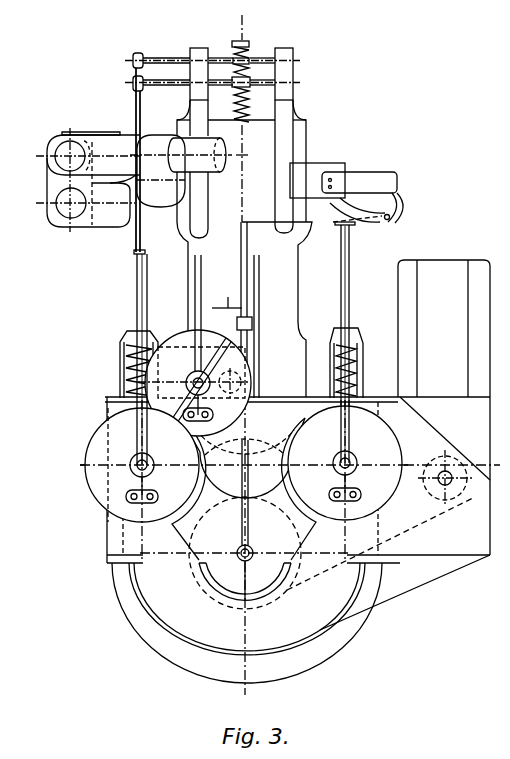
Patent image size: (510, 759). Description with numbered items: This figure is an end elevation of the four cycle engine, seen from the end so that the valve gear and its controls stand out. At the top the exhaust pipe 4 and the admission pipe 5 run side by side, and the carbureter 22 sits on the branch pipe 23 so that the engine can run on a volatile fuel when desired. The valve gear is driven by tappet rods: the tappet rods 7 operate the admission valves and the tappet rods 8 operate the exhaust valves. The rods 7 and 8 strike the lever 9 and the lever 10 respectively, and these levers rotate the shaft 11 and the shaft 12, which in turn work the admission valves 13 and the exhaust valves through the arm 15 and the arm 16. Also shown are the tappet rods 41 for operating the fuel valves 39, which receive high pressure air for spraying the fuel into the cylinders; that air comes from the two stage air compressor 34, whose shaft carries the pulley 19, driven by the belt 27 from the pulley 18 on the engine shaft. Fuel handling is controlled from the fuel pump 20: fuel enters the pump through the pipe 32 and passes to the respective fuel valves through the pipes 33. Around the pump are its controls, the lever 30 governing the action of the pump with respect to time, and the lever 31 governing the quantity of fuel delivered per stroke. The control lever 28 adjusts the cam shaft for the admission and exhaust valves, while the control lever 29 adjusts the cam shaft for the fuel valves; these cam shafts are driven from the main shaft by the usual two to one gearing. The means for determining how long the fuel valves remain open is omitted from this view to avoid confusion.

The exhaust pipe 4 is at (57, 207).
The admission pipe 5 is at (62, 152).
The tappet rods 7 is at (135, 242).
The tappet rods 8 is at (135, 242).
The lever 9 is at (133, 63).
The lever 10 is at (133, 85).
The shaft 11 is at (158, 62).
The shaft 12 is at (176, 85).
The admission valves 13 is at (248, 103).
The arm 15 is at (248, 55).
The arm 16 is at (234, 89).
The pulley 18 is at (280, 513).
The pulley 19 is at (446, 460).
The fuel pump 20 is at (253, 327).
The carbureter 22 is at (161, 171).
The branch pipe 23 is at (181, 155).
The belt 27 is at (408, 529).
The control lever 28 is at (148, 281).
The control lever 29 is at (350, 278).
The lever 30 is at (202, 270).
The lever 31 is at (260, 268).
The pipe 32 is at (229, 304).
The pipes 33 is at (241, 236).
The two stage air compressor 34 is at (444, 407).
The fuel valves 39 is at (352, 179).
The tappet rods 41 is at (350, 237).